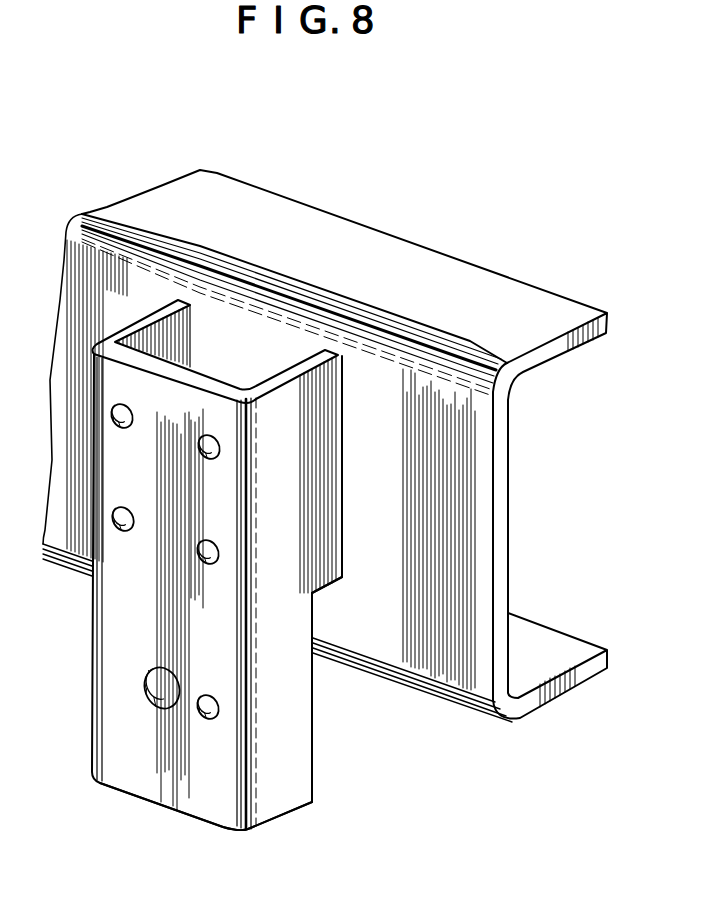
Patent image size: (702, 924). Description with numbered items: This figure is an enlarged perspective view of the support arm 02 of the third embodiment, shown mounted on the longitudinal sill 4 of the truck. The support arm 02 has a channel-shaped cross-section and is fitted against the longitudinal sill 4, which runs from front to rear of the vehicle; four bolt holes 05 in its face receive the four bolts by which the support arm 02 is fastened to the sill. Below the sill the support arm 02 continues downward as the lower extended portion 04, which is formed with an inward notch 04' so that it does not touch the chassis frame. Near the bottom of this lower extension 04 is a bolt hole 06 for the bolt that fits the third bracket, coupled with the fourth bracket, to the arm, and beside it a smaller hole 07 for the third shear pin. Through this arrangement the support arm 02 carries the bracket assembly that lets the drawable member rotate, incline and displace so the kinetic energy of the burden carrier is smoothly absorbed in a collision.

The longitudinal sill 4 is at (503, 543).
The support arm 02 is at (333, 447).
The lower extended portion 04 is at (209, 779).
The inward notch 04' is at (344, 689).
The bolt holes 05 is at (124, 428).
The bolt hole 06 is at (166, 645).
The hole for the third shear pin 07 is at (207, 719).